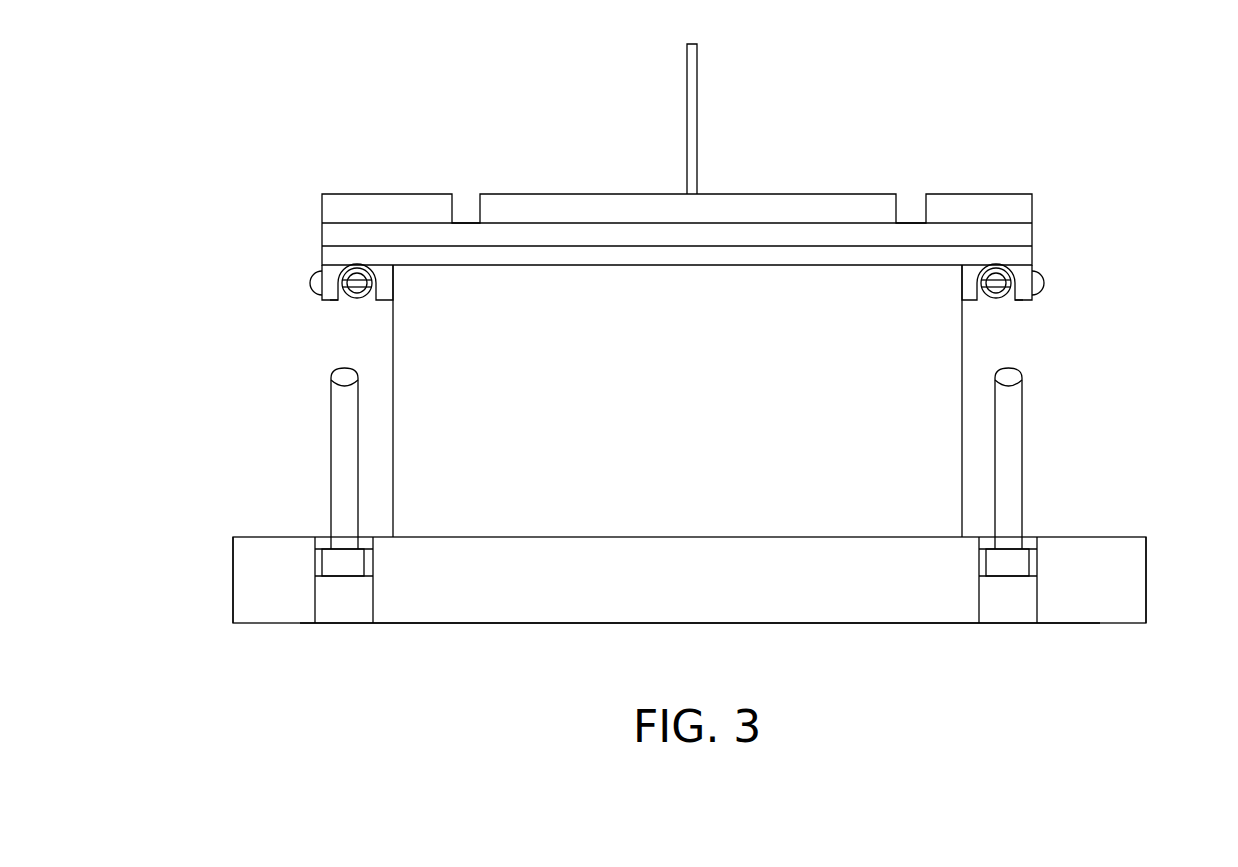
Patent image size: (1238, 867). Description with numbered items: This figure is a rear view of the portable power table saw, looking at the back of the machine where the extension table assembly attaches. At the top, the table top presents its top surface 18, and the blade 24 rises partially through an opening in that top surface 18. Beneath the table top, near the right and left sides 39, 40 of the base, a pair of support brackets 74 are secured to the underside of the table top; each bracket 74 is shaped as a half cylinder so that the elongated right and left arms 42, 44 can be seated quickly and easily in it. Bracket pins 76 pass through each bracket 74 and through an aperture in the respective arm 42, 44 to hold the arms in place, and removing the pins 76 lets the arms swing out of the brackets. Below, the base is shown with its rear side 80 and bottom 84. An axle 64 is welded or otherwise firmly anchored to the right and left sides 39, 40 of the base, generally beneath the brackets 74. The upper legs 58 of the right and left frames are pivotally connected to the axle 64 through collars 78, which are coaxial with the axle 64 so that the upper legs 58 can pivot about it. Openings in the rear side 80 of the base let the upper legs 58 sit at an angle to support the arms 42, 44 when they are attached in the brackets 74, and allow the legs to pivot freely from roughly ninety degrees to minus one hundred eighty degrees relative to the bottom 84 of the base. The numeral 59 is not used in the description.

The top surface 18 is at (578, 192).
The blade 24 is at (700, 78).
The right side of the base 39 is at (233, 573).
The left side of the base 40 is at (1146, 573).
The right arm 42 is at (355, 298).
The left arm 44 is at (997, 298).
The upper leg 58 is at (345, 473).
The right guide post 59 is at (1008, 475).
The axle 64 is at (314, 562).
The support bracket 74 is at (330, 304).
The bracket pin 76 is at (318, 275).
The collar 78 is at (348, 567).
The rear side of the base 80 is at (573, 580).
The bottom of the base 84 is at (770, 624).